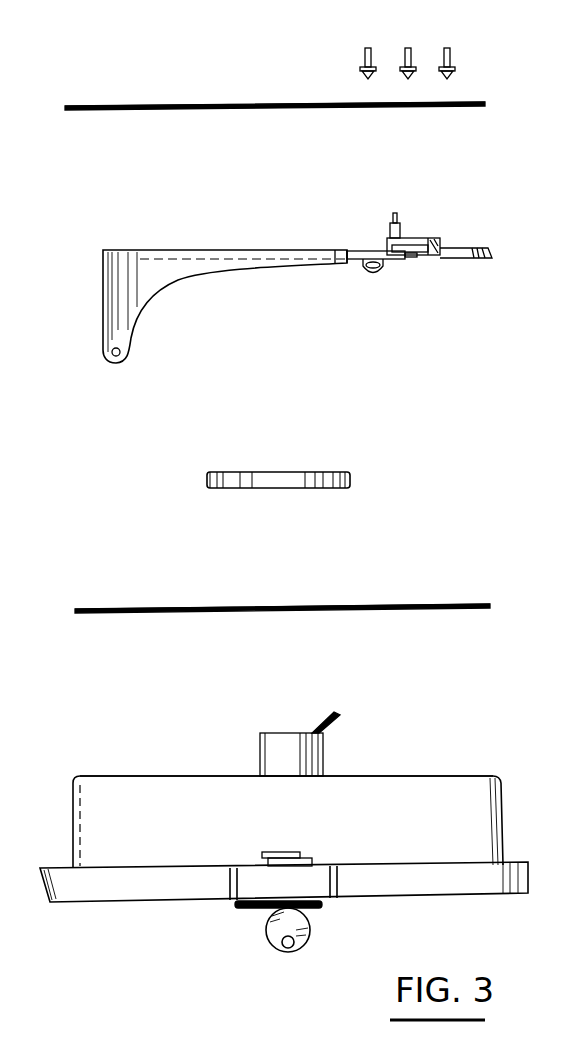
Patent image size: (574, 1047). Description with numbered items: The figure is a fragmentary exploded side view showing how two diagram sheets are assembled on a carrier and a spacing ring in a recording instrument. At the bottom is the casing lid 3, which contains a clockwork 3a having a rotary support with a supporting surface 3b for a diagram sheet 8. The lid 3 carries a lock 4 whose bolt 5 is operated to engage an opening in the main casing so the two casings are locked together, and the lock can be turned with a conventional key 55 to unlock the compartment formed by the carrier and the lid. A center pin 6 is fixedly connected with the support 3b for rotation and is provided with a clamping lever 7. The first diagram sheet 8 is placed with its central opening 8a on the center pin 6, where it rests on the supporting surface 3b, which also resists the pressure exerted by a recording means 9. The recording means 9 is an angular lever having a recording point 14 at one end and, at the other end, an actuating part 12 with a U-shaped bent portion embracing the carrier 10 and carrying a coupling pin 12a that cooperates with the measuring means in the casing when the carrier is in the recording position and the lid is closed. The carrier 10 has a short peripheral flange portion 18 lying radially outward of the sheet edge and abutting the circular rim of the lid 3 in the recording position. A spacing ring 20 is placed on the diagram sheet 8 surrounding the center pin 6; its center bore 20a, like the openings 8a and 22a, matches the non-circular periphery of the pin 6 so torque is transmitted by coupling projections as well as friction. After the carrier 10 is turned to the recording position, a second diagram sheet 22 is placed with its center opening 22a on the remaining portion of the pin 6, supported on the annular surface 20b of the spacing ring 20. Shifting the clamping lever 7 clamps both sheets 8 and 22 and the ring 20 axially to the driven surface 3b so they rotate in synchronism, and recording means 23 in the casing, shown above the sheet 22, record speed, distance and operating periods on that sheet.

The casing lid 3 is at (73, 846).
The clockwork 3a is at (80, 846).
The supporting surface 3b is at (333, 778).
The lock 4 is at (312, 907).
The bolt 5 is at (284, 856).
The center pin 6 is at (283, 745).
The clamping lever 7 is at (340, 721).
The diagram sheet 8 is at (428, 611).
The central opening 8a is at (297, 607).
The recording means 9 is at (421, 259).
The carrier 10 is at (103, 305).
The actuating part 12 is at (440, 240).
The coupling pin 12a is at (398, 215).
The recording point 14 is at (371, 275).
The peripheral flange portion 18 is at (481, 259).
The spacing ring 20 is at (336, 489).
The center bore 20a is at (317, 482).
The annular surface 20b is at (336, 475).
The diagram sheet 22 is at (392, 110).
The center opening 22a is at (263, 104).
The recording means 23 is at (383, 48).
The key 55 is at (305, 945).